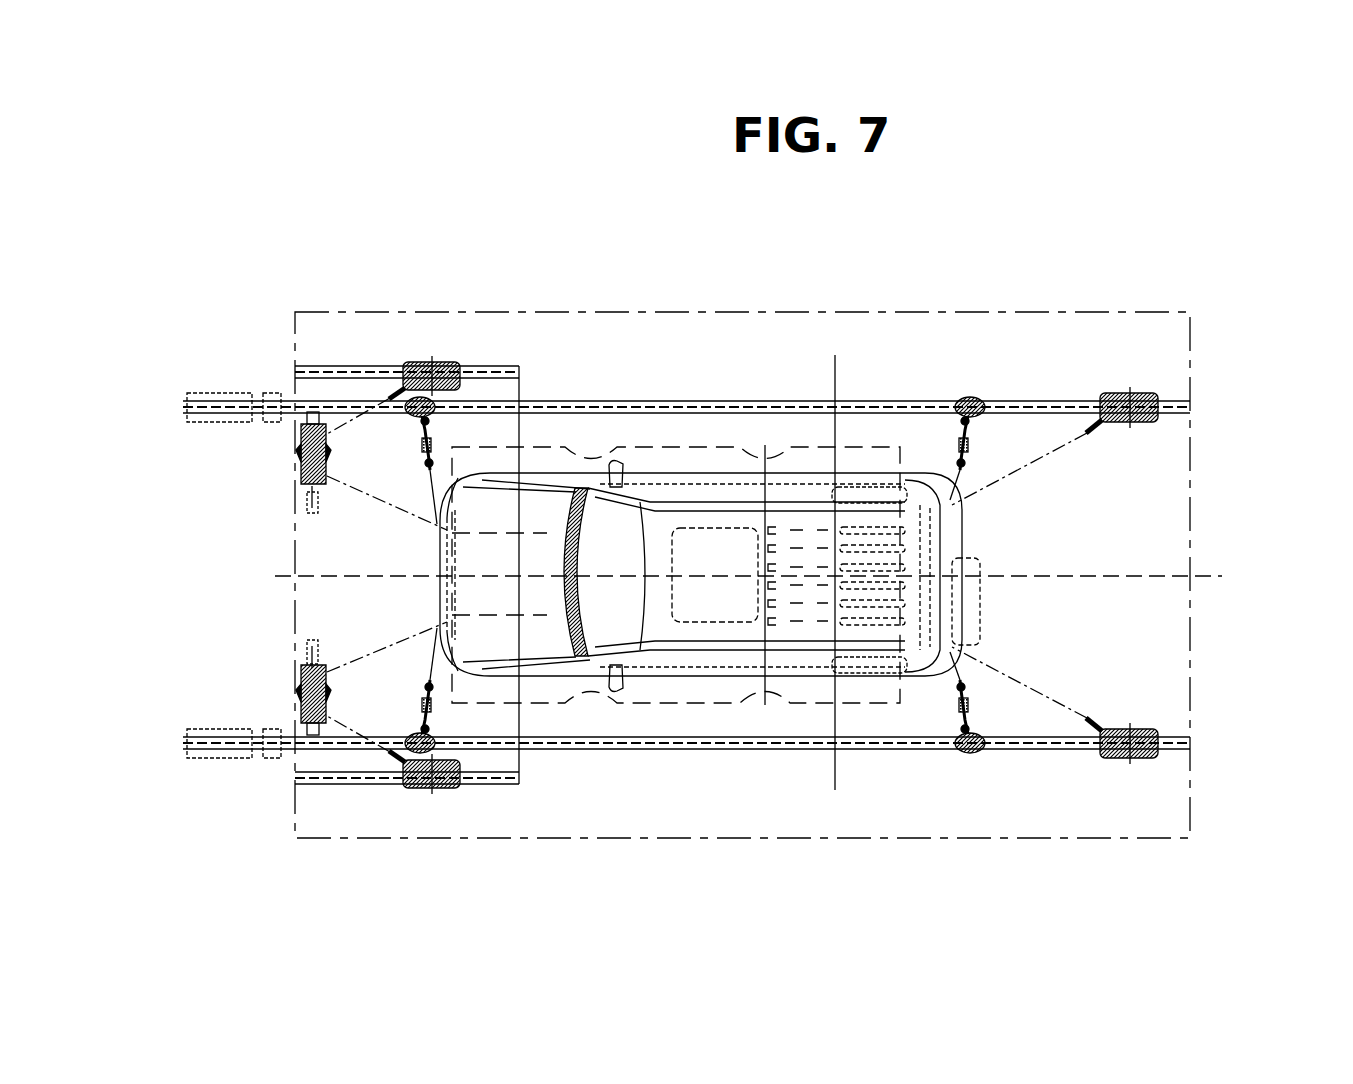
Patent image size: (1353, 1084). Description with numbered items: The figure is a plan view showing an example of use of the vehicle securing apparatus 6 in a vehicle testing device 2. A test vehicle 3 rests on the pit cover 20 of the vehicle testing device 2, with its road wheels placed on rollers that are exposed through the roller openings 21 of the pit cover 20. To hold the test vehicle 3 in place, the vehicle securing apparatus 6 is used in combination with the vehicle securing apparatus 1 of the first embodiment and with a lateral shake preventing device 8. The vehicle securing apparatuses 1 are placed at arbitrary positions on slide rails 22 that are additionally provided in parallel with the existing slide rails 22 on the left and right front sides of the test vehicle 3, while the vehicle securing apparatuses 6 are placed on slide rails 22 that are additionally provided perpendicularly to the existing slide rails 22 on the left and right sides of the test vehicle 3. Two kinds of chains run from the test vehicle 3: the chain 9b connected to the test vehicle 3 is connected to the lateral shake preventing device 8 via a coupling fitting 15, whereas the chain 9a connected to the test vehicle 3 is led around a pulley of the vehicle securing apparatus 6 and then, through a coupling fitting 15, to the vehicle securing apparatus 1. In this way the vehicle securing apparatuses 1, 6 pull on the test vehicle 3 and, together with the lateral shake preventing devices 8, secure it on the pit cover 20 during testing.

The vehicle securing apparatus 1 is at (423, 358).
The vehicle testing device 2 is at (834, 287).
The test vehicle 3 is at (975, 535).
The vehicle securing apparatus 6 is at (298, 452).
The lateral shake preventing device 8 is at (412, 416).
The chain 9a is at (352, 417).
The chain 9b is at (432, 512).
The coupling fitting 15 is at (433, 447).
The pit cover 20 is at (1192, 504).
The roller opening 21 is at (617, 447).
The slide rail 22 is at (225, 393).